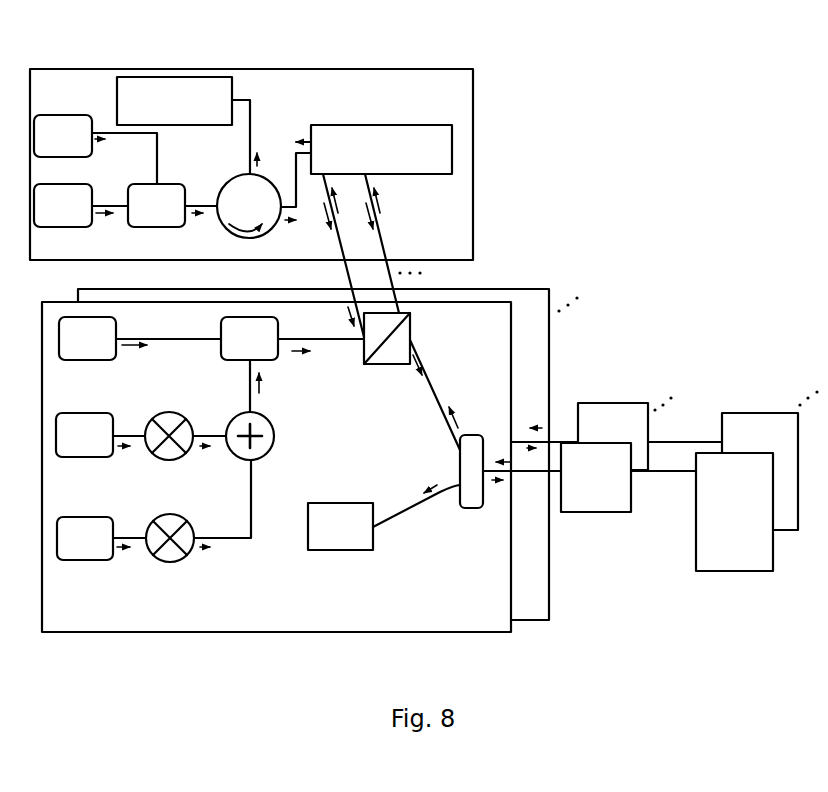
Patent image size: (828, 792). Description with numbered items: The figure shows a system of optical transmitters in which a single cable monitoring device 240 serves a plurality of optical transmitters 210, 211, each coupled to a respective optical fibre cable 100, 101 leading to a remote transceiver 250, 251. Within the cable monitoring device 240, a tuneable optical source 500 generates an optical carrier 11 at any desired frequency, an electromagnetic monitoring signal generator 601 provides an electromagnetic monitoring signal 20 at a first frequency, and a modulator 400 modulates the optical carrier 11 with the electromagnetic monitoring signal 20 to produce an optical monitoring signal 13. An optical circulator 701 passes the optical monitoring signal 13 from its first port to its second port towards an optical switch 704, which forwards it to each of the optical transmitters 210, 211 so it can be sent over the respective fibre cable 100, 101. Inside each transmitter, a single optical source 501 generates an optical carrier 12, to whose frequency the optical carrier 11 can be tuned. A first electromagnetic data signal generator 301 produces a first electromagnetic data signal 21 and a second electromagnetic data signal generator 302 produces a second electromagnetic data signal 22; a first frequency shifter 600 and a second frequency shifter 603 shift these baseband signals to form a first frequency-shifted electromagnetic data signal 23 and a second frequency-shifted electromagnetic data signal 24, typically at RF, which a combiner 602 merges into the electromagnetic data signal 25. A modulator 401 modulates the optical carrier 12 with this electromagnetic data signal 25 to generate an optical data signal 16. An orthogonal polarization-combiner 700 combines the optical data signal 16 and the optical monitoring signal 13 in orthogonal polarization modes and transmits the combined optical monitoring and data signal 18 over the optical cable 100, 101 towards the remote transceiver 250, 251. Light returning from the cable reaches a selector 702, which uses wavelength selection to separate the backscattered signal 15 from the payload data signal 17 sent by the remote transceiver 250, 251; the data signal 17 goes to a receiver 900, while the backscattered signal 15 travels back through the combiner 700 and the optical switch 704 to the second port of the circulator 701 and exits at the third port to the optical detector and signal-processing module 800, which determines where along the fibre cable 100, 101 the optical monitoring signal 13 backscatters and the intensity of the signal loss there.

The cable monitoring device 240 is at (244, 68).
The optical detector and signal-processing module 800 is at (183, 125).
The electromagnetic monitoring signal generator 601 is at (95, 149).
The electromagnetic monitoring signal 20 is at (97, 141).
The tuneable optical source 500 is at (81, 205).
The modulator 400 is at (172, 205).
The optical carrier 11 is at (102, 216).
The optical monitoring signal 13 is at (366, 232).
The optical circulator 701 is at (256, 198).
The optical switch 704 is at (366, 231).
The backscattered signal 15 is at (263, 156).
The optical transmitter 210 is at (512, 302).
The optical transmitter 211 is at (552, 289).
The optical source 501 is at (140, 338).
The modulator 401 is at (292, 364).
The optical carrier 12 is at (136, 346).
The first frequency shifter 600 is at (148, 412).
The combiner 602 is at (242, 413).
The first electromagnetic data signal generator 301 is at (100, 435).
The first electromagnetic data signal 21 is at (124, 449).
The first frequency-shifted electromagnetic data signal 23 is at (207, 449).
The electromagnetic data signal 25 is at (263, 378).
The second frequency shifter 603 is at (166, 514).
The second electromagnetic data signal generator 302 is at (101, 538).
The second electromagnetic data signal 22 is at (124, 550).
The second frequency-shifted electromagnetic data signal 24 is at (207, 550).
The optical data signal 16 is at (302, 356).
The orthogonal polarization-combiner 700 is at (377, 366).
The combined optical monitoring and data signal 18 is at (418, 368).
The data signal 17 is at (426, 491).
The receiver 900 is at (384, 517).
The selector 702 is at (462, 508).
The optical fibre cable 101 is at (631, 403).
The optical fibre cable 100 is at (614, 443).
The remote transceiver 250 is at (700, 452).
The remote transceiver 251 is at (757, 413).